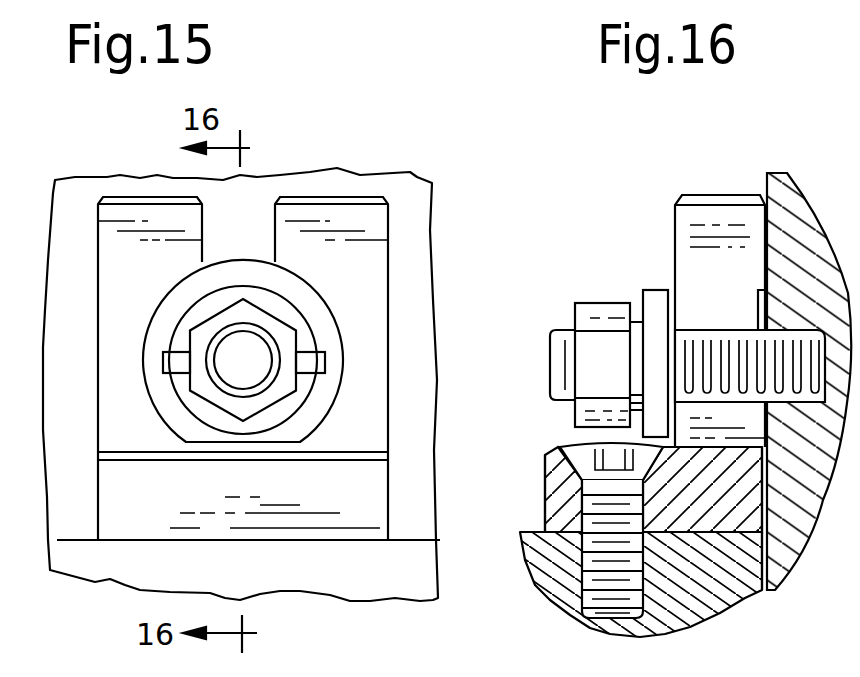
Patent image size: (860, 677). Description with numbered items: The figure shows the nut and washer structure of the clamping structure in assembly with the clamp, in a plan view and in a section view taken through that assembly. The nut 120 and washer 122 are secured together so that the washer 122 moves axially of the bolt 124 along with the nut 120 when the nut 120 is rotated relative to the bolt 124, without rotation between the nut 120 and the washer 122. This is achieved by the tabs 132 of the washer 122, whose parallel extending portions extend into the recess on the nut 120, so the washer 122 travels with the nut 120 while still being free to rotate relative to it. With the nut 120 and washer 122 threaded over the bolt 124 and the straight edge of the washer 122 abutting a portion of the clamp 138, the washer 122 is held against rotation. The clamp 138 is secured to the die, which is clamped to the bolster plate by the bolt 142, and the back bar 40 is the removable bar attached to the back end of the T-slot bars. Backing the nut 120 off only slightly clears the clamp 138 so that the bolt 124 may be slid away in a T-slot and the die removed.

In FIG. 15, the back bar 40 is at (375, 445).
In FIG. 16, the back bar 40 is at (545, 490).
In FIG. 15, the nut 120 is at (203, 325).
In FIG. 16, the nut 120 is at (606, 303).
In FIG. 15, the washer 122 is at (173, 416).
In FIG. 16, the washer 122 is at (645, 290).
In FIG. 15, the bolt 124 is at (290, 322).
In FIG. 16, the bolt 124 is at (550, 350).
In FIG. 15, the tabs 132 is at (163, 360).
In FIG. 15, the clamp 138 is at (355, 240).
In FIG. 16, the clamp 138 is at (697, 193).
In FIG. 16, the bolt 142 is at (582, 577).